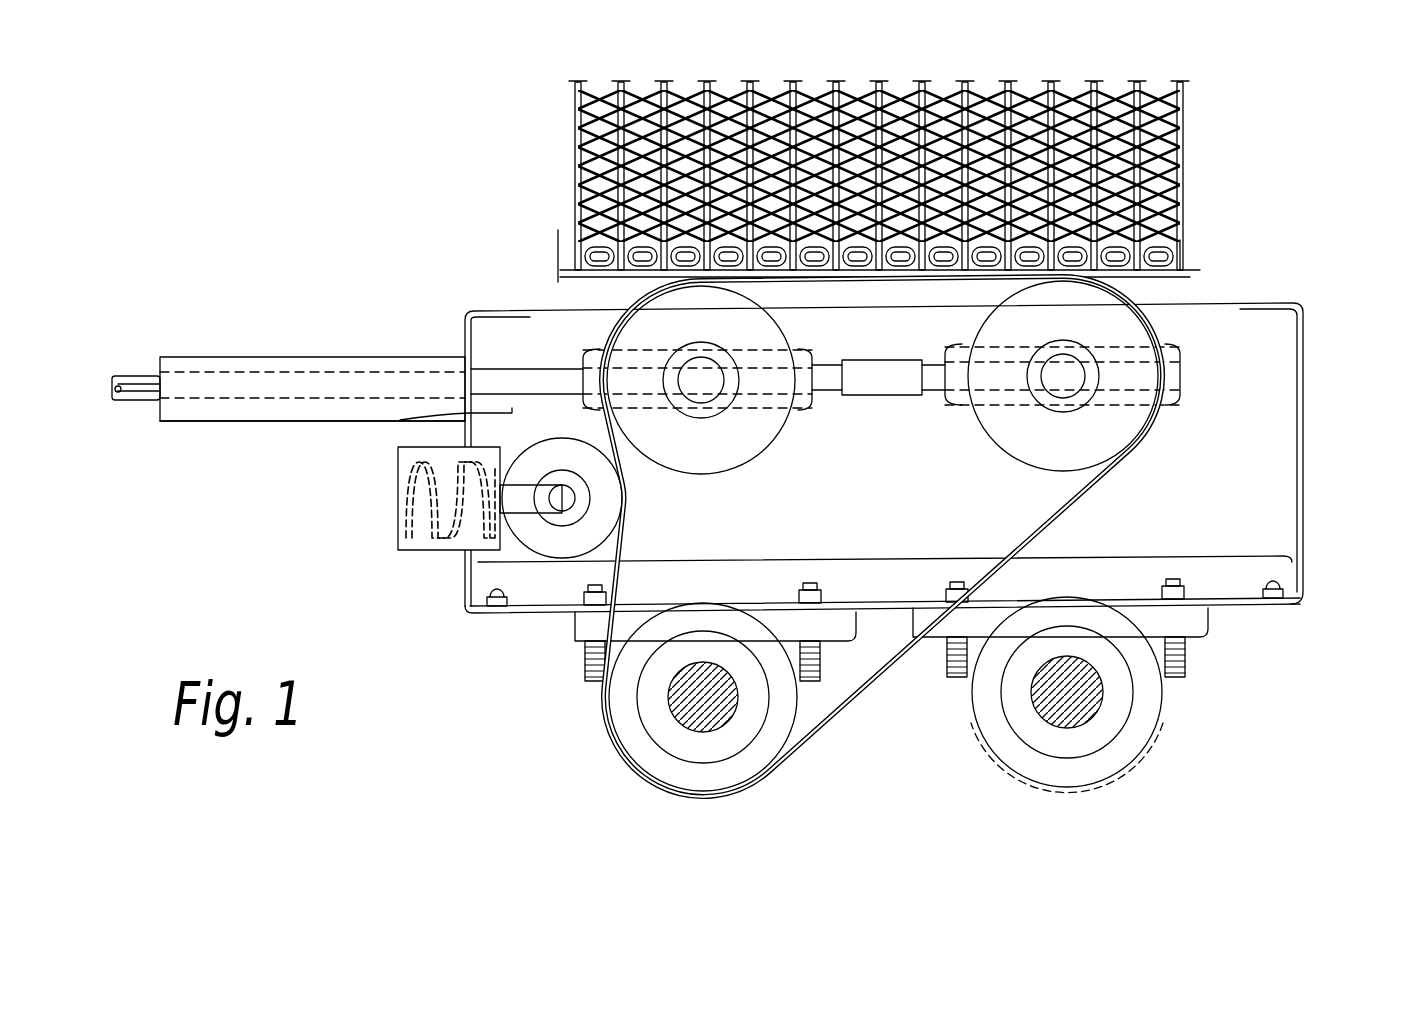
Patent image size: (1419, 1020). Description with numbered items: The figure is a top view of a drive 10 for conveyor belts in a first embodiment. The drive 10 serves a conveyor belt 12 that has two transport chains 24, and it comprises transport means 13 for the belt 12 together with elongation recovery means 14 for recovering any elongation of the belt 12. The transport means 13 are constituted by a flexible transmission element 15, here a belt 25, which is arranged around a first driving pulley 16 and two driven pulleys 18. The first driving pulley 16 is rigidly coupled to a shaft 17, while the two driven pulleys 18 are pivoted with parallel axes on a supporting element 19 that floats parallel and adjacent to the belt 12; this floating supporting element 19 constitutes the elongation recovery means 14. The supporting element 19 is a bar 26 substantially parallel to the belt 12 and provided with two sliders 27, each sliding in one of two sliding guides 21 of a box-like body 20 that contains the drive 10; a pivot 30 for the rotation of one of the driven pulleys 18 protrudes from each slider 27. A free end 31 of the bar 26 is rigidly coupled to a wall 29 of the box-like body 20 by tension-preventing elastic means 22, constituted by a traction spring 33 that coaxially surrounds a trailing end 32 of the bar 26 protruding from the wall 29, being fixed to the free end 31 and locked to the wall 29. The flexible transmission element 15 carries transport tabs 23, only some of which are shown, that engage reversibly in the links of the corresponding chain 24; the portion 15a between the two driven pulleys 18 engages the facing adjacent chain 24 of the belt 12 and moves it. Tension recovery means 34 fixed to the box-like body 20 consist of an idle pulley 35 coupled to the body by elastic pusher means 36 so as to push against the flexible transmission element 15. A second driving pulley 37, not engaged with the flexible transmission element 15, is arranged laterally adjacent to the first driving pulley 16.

The drive 10 is at (345, 252).
The conveyor belt 12 is at (565, 150).
The transport means 13 is at (787, 772).
The elongation recovery means 14 is at (158, 352).
The flexible transmission element 15 is at (1062, 518).
The portion of the flexible transmission element 15a is at (853, 396).
The first driving pulley 16 is at (650, 762).
The shaft 17 is at (700, 722).
The driven pulleys 18 is at (705, 452).
The supporting element 19 is at (901, 402).
The box-like body 20 is at (1312, 396).
The sliding guides 21 is at (1140, 386).
The tension-preventing elastic means 22 is at (258, 432).
The transport tabs 23 is at (790, 268).
The transport chains 24 is at (1206, 250).
The belt 25 is at (568, 640).
The bar 26 is at (400, 420).
The sliders 27 is at (773, 318).
The wall 29 is at (466, 563).
The pivot 30 is at (697, 380).
The free end 31 is at (124, 357).
The trailing end 32 is at (206, 402).
The traction spring 33 is at (237, 356).
The tension recovery means 34 is at (394, 497).
The idle pulley 35 is at (540, 540).
The elastic pusher means 36 is at (425, 537).
The second driving pulley 37 is at (987, 705).